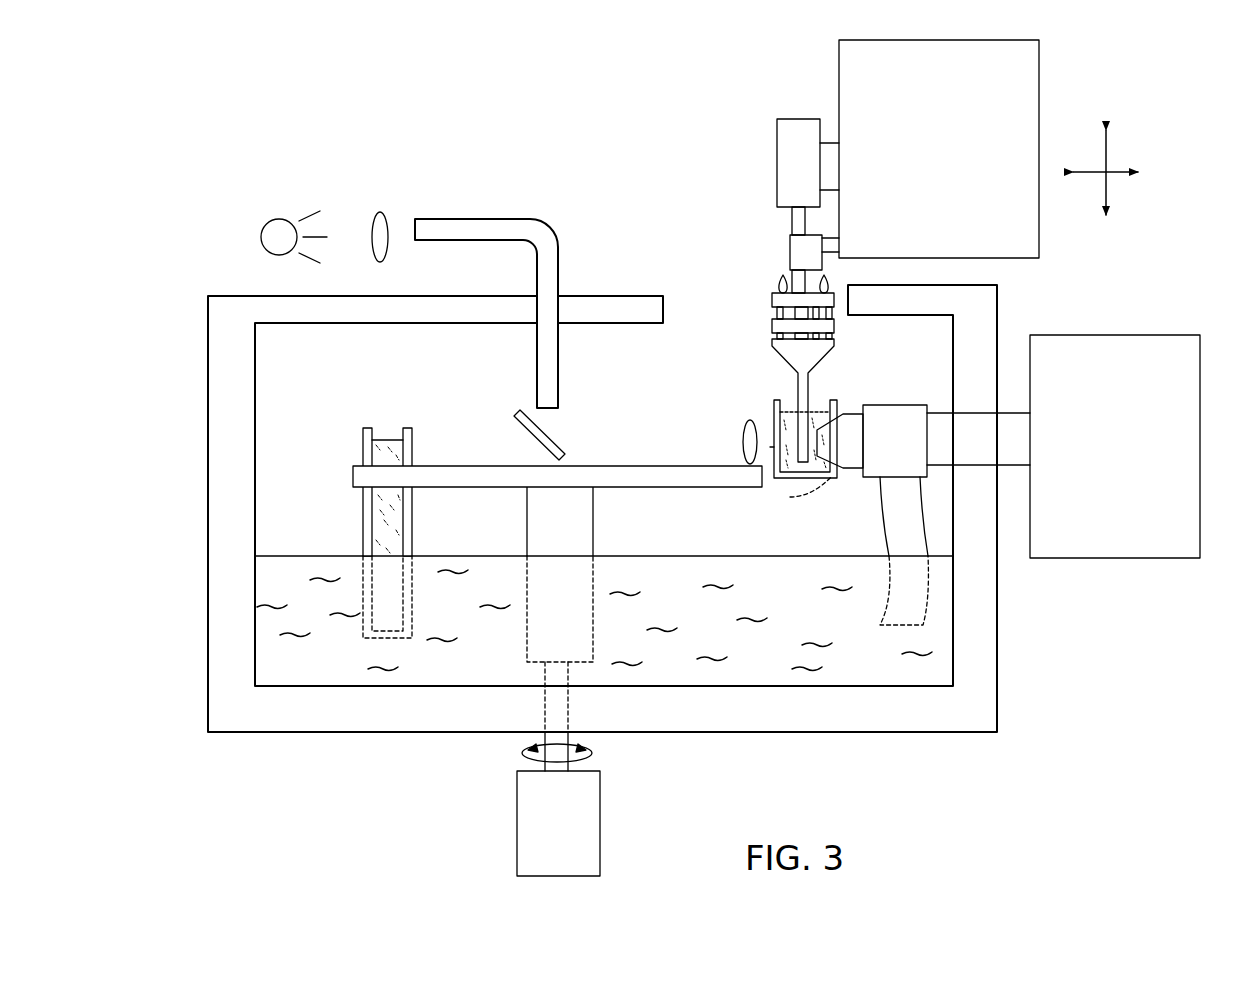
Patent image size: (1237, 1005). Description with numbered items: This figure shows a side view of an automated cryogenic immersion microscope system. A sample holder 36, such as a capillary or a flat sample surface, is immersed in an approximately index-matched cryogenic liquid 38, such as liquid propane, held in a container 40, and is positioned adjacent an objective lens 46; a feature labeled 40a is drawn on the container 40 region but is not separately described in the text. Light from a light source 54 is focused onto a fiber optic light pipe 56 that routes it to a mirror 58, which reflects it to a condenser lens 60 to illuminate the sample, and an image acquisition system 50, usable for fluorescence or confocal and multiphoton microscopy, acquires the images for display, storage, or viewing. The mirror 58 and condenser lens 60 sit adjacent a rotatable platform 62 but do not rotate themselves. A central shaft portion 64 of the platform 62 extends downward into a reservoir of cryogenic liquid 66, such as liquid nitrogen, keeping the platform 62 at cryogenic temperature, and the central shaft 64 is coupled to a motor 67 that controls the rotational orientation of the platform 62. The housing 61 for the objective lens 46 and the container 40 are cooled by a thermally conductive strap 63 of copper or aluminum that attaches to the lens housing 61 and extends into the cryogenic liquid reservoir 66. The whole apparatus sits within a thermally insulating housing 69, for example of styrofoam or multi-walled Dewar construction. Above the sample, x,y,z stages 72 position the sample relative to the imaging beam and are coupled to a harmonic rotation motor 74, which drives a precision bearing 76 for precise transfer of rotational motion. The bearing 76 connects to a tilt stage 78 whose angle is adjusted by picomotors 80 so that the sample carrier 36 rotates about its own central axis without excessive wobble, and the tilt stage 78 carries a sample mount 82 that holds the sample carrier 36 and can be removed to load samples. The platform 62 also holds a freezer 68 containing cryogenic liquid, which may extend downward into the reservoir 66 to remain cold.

The sample holder 36 is at (795, 432).
The cryogenic liquid 38 is at (790, 405).
The container 40 is at (833, 483).
The heater element 40a is at (770, 447).
The objective lens 46 is at (792, 493).
The image acquisition system 50 is at (1172, 335).
The light source 54 is at (280, 219).
The fiber optic light pipe 56 is at (533, 219).
The mirror 58 is at (517, 430).
The condenser lens 60 is at (742, 447).
The housing 61 is at (882, 456).
The rotatable platform 62 is at (655, 466).
The thermally conductive strap 63 is at (890, 531).
The central shaft portion 64 is at (548, 529).
The cryogenic liquid reservoir 66 is at (679, 630).
The motor 67 is at (541, 834).
The freezer 68 is at (363, 447).
The housing 69 is at (208, 352).
The x,y,z stages 72 is at (915, 164).
The harmonic rotation motor 74 is at (790, 157).
The precision bearing 76 is at (790, 248).
The tilt stage 78 is at (772, 301).
The picomotors 80 is at (781, 290).
The sample mount 82 is at (815, 355).